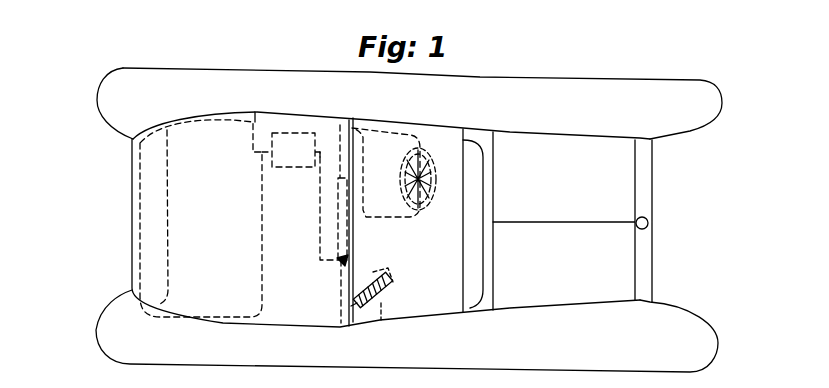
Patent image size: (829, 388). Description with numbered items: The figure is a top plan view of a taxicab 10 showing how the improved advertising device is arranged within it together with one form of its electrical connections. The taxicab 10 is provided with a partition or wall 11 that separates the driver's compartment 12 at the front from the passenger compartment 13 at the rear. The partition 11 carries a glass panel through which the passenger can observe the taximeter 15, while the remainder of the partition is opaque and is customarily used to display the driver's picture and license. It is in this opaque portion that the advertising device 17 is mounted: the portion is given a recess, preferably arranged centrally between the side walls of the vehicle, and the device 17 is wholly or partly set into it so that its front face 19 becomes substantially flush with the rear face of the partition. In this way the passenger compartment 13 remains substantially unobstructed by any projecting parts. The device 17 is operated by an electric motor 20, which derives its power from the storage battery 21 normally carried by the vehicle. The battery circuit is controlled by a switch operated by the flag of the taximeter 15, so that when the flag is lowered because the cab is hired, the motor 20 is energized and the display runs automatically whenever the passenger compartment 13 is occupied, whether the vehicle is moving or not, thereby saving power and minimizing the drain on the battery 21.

The taxicab 10 is at (552, 74).
The partition or wall 11 is at (335, 298).
The driver's compartment 12 is at (405, 133).
The passenger compartment 13 is at (235, 130).
The taximeter 15 is at (393, 279).
The advertising device 17 is at (335, 238).
The front face 19 is at (338, 207).
The electric motor 20 is at (350, 256).
The storage battery 21 is at (293, 140).